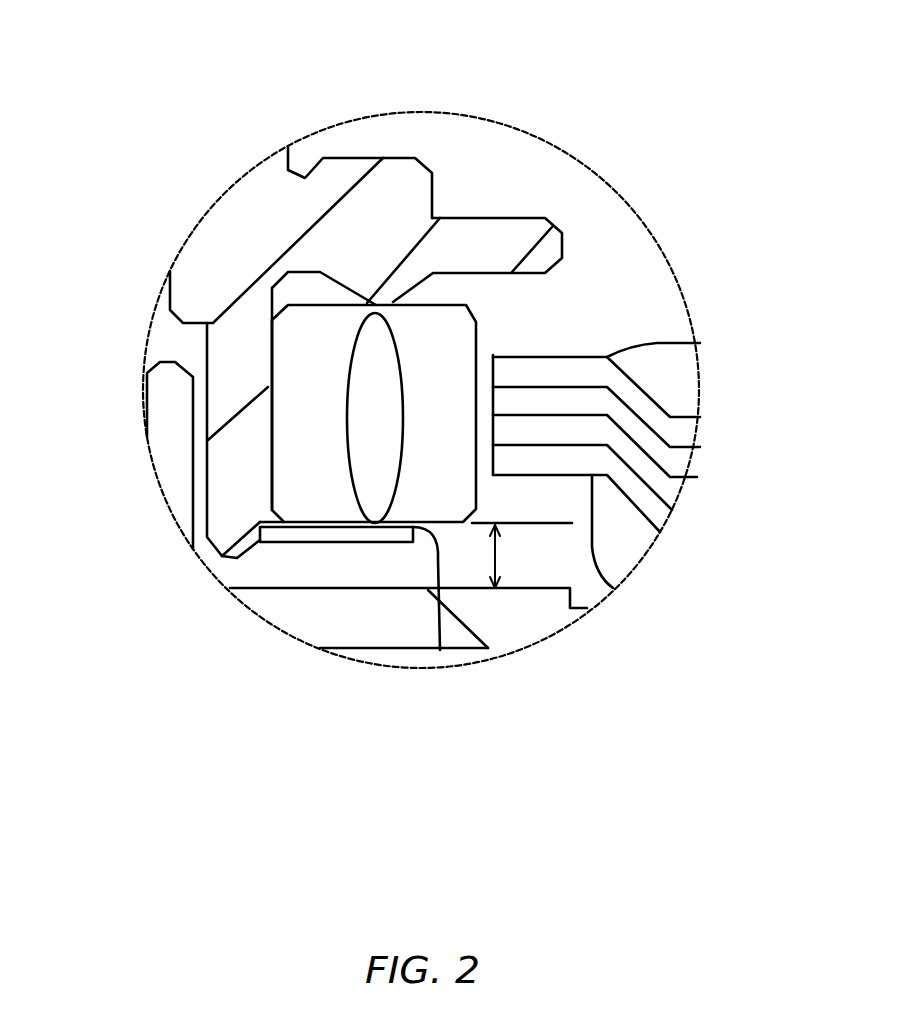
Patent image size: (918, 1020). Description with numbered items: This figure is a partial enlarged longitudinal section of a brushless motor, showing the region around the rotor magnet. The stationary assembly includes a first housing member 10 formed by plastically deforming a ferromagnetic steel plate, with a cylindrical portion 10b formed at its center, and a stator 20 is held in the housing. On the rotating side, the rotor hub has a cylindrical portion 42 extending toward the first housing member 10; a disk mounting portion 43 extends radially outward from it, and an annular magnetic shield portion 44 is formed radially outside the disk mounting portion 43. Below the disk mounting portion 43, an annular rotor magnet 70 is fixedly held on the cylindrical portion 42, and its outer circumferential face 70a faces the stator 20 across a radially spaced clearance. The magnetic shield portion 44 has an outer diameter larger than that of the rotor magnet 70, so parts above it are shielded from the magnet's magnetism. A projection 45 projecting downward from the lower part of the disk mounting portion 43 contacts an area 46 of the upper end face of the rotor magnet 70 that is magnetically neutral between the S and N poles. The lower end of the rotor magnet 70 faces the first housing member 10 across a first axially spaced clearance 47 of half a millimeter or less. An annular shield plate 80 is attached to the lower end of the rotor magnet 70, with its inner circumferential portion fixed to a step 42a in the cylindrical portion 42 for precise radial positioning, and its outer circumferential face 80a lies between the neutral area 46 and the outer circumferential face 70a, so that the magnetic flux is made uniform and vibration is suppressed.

The first housing member 10 is at (340, 625).
The cylindrical portion 10b is at (168, 448).
The stator 20 is at (622, 537).
The cylindrical portion 42 is at (228, 278).
The step 42a is at (258, 527).
The disk mounting portion 43 is at (365, 152).
The magnetic shield portion 44 is at (503, 217).
The projection 45 is at (405, 275).
The magnetically neutral area 46 is at (375, 425).
The first axially spaced clearance 47 is at (495, 557).
The rotor magnet 70 is at (320, 465).
The outer circumferential face 70a is at (480, 342).
The shield plate 80 is at (343, 533).
The outer circumferential face 80a is at (440, 650).